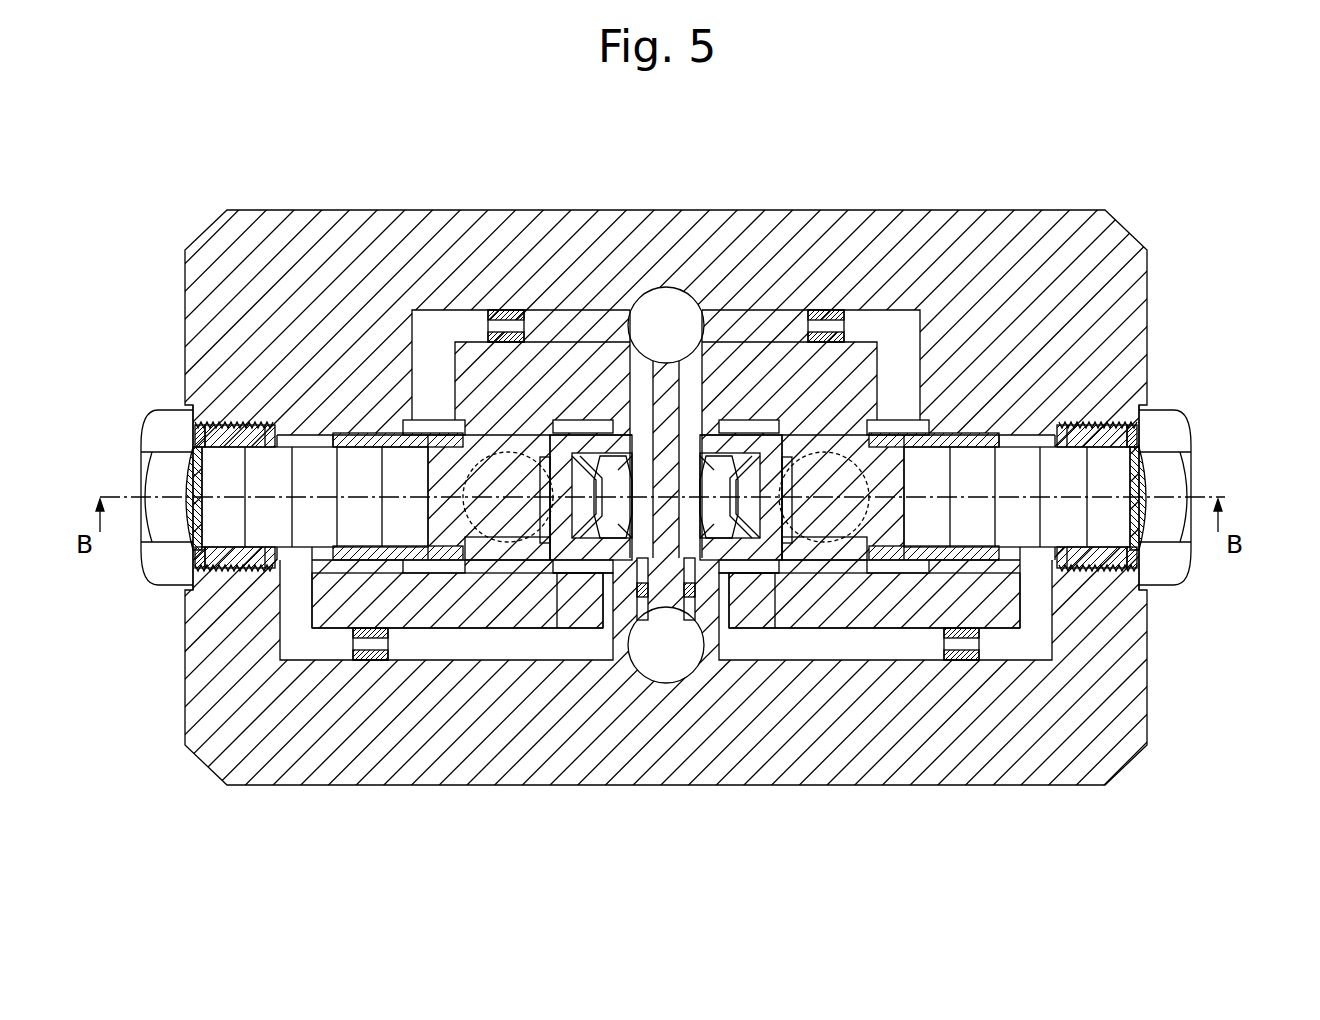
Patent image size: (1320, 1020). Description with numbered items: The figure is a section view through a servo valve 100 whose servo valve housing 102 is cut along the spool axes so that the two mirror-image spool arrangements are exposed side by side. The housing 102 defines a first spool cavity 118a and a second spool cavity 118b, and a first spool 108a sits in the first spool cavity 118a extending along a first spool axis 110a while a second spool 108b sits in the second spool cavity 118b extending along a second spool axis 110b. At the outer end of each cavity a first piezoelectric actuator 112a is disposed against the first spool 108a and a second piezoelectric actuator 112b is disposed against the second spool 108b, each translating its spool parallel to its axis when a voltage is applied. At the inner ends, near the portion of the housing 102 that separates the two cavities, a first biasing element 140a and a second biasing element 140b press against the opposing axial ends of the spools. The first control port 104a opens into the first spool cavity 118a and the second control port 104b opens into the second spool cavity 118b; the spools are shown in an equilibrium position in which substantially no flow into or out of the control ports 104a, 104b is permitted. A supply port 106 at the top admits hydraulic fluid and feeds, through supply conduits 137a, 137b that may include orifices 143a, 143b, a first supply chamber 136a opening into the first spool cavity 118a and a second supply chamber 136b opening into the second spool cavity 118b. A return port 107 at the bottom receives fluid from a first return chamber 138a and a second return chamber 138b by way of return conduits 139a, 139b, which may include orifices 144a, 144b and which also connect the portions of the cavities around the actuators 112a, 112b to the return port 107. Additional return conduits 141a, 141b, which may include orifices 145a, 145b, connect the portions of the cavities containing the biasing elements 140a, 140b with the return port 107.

The servo valve 100 is at (143, 180).
The servo valve housing 102 is at (1086, 270).
The first control port 104a is at (500, 445).
The second control port 104b is at (835, 445).
The supply port 106 is at (665, 312).
The return port 107 is at (672, 660).
The first spool 108a is at (447, 513).
The second spool 108b is at (883, 513).
The first spool axis 110a is at (542, 500).
The second spool axis 110b is at (793, 495).
The first piezoelectric actuator 112a is at (318, 468).
The second piezoelectric actuator 112b is at (1017, 468).
The first spool cavity 118a is at (516, 550).
The second spool cavity 118b is at (816, 550).
The first supply chamber 136a is at (427, 567).
The second supply chamber 136b is at (905, 567).
The first supply conduit 137a is at (420, 365).
The second supply conduit 137b is at (908, 365).
The first return chamber 138a is at (591, 430).
The second return chamber 138b is at (745, 428).
The first return conduit 139a is at (293, 623).
The second return conduit 139b is at (1040, 612).
The first biasing element 140a is at (603, 528).
The second biasing element 140b is at (727, 528).
The first additional return conduit 141a is at (640, 586).
The second additional return conduit 141b is at (692, 586).
The first supply conduit orifice 143a is at (503, 315).
The second supply conduit orifice 143b is at (828, 315).
The first return conduit orifice 144a is at (365, 657).
The second return conduit orifice 144b is at (966, 657).
The first additional return conduit orifice 145a is at (640, 608).
The second additional return conduit orifice 145b is at (692, 608).